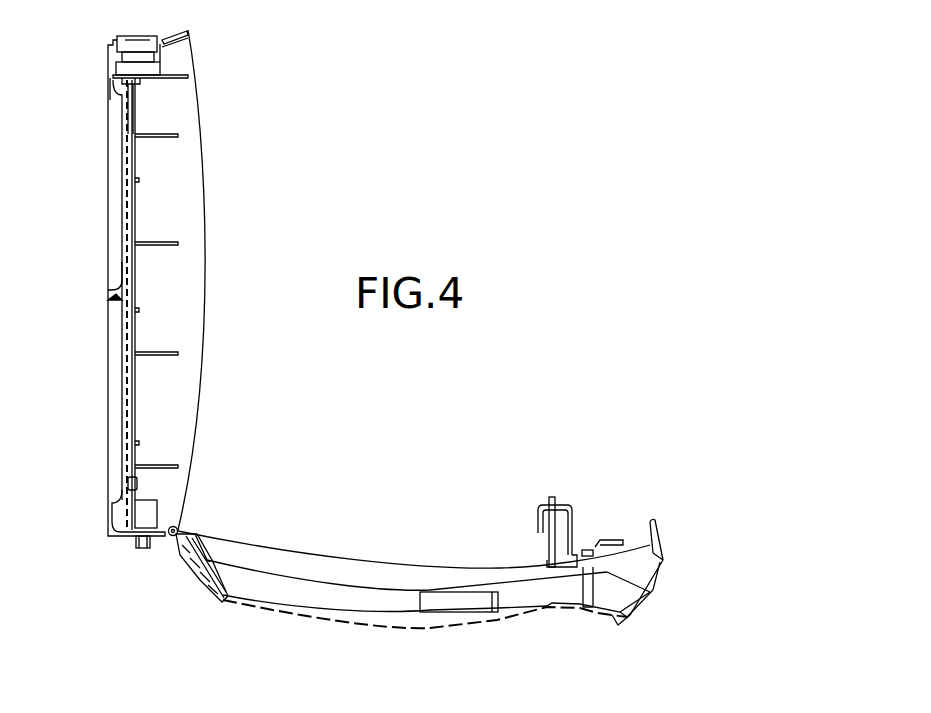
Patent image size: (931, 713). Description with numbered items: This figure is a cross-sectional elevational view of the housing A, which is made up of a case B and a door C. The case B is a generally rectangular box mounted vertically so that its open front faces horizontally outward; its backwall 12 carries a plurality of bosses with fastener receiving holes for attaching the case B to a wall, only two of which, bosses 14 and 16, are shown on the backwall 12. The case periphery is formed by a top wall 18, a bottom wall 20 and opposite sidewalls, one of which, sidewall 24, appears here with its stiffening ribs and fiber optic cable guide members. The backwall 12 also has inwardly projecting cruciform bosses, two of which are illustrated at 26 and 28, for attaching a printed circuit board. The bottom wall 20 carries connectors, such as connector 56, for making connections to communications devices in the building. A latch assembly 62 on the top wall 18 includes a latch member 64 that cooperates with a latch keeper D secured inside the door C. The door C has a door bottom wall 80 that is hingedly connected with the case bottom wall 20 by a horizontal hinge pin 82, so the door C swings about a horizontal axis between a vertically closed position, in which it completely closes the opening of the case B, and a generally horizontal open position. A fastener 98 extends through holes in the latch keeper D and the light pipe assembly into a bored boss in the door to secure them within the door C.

The backwall 12 is at (122, 203).
The fastener receiving boss 14 is at (110, 270).
The fastener receiving boss 16 is at (110, 150).
The top wall 18 is at (176, 36).
The bottom wall 20 is at (112, 533).
The sidewall 24 is at (190, 214).
The cruciform boss 26 is at (128, 482).
The cruciform boss 28 is at (128, 120).
The connector 56 is at (148, 508).
The latch assembly 62 is at (140, 40).
The latch member 64 is at (185, 75).
The door bottom wall 80 is at (190, 558).
The horizontal hinge pin 82 is at (176, 530).
The fastener 98 is at (587, 548).
The housing A is at (118, 576).
The case B is at (207, 145).
The door C is at (678, 555).
The latch keeper D is at (566, 494).